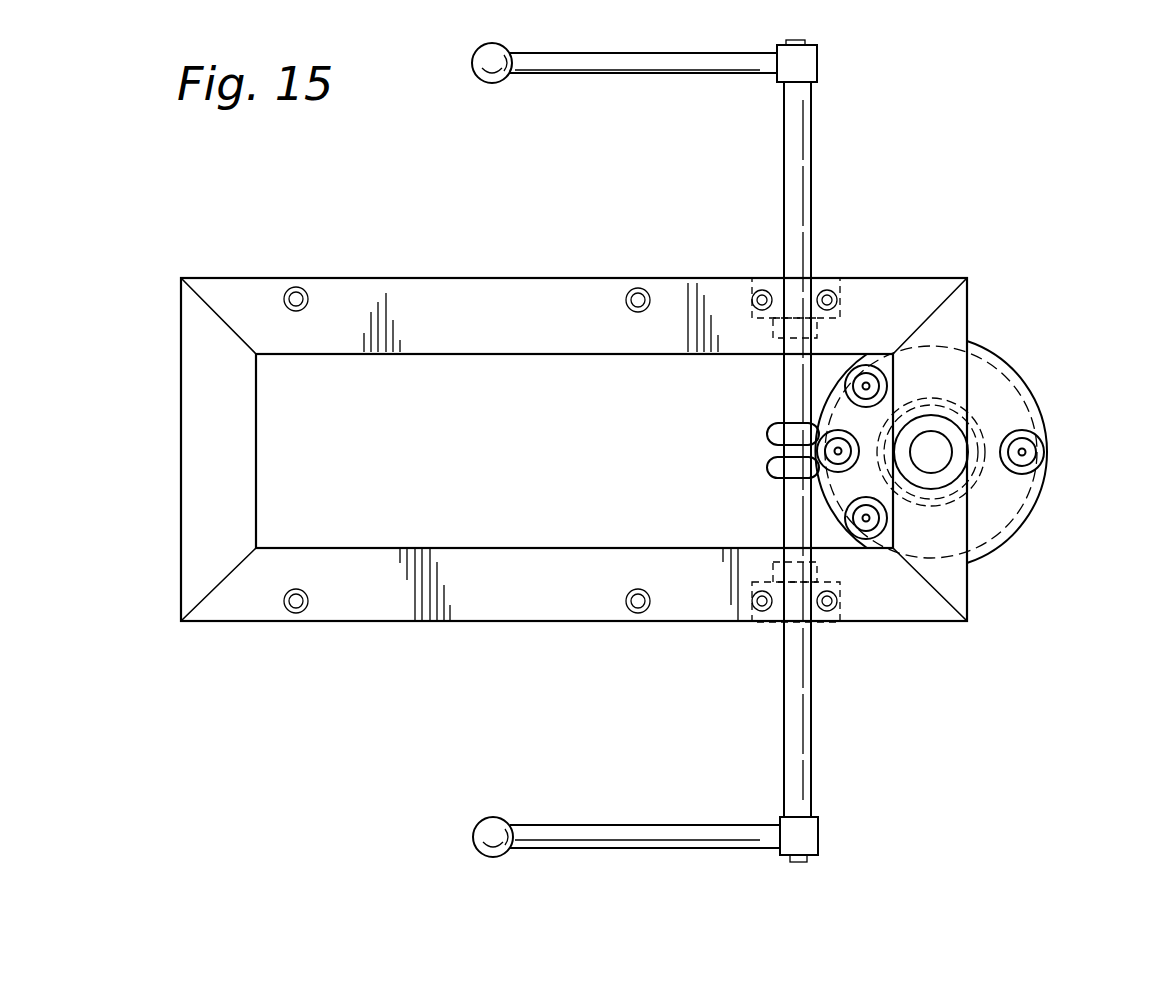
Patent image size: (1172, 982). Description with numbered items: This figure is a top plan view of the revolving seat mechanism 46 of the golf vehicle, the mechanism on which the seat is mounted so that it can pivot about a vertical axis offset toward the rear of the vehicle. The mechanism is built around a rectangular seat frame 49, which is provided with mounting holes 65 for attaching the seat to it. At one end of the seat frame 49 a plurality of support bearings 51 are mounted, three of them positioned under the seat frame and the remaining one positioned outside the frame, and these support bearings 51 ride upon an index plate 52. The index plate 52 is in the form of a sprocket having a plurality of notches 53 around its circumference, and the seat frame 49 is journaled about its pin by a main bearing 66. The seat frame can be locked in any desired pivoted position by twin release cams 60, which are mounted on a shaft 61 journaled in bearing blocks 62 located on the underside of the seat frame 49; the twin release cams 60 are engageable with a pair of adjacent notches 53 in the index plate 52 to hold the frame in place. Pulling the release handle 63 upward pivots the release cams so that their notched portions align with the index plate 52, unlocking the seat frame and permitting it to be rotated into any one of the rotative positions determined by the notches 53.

The revolving seat mechanism 46 is at (923, 179).
The seat frame 49 is at (428, 278).
The support bearings 51 is at (823, 402).
The index plate 52 is at (915, 400).
The notches 53 is at (1003, 550).
The twin release cams 60 is at (767, 433).
The shaft 61 is at (815, 735).
The bearing blocks 62 is at (757, 590).
The release handle 63 is at (641, 827).
The mounting holes 65 is at (639, 588).
The main bearing 66 is at (910, 400).